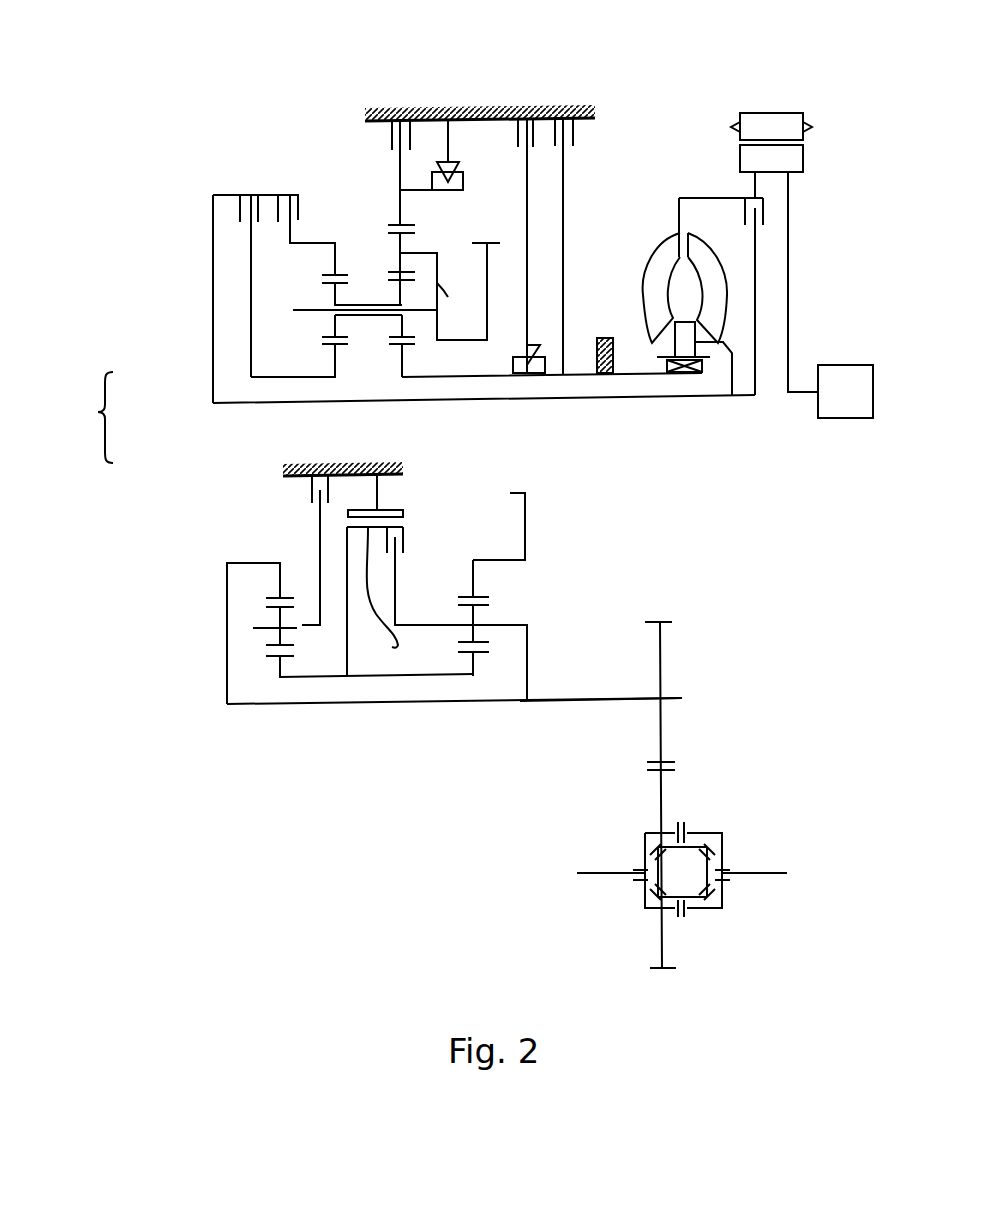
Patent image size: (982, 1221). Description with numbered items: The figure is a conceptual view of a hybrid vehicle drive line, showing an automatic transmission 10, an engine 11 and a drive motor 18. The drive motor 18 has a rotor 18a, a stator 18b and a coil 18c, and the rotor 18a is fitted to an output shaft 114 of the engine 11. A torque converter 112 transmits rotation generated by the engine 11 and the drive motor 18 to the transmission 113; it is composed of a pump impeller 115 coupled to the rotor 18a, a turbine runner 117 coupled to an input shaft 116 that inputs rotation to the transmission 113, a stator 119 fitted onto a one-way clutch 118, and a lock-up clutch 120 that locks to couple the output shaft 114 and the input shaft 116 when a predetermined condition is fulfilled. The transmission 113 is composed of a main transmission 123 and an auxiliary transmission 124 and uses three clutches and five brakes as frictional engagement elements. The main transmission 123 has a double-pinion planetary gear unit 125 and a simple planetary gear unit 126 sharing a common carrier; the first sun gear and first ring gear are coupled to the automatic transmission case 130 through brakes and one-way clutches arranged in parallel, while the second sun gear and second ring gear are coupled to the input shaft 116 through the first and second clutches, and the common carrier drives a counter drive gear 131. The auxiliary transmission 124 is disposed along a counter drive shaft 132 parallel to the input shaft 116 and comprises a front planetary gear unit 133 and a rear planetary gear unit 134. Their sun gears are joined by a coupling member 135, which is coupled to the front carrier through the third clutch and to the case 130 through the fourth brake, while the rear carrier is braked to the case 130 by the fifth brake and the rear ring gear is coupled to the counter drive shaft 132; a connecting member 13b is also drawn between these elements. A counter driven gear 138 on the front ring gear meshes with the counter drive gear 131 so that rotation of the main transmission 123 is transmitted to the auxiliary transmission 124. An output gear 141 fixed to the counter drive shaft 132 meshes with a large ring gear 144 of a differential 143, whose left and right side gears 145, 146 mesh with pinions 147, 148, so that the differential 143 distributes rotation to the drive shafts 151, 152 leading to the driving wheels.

The automatic transmission 10 is at (555, 68).
The engine 11 is at (865, 365).
The drive motor 18 is at (817, 100).
The rotor 18a is at (797, 160).
The stator 18b is at (790, 122).
The coil 18c is at (812, 127).
The torque converter 112 is at (725, 273).
The transmission 113 is at (95, 412).
The output shaft 114 is at (803, 395).
The pump impeller 115 is at (662, 243).
The input shaft 116 is at (607, 400).
The turbine runner 117 is at (727, 278).
The one-way clutch 118 is at (690, 375).
The stator 119 is at (723, 342).
The lock-up clutch 120 is at (765, 212).
The main transmission 123 is at (436, 245).
The auxiliary transmission 124 is at (400, 634).
The double-pinion planetary gear unit 125 is at (450, 227).
The simple planetary gear unit 126 is at (278, 270).
The automatic transmission case 130 is at (585, 107).
The counter drive gear 131 is at (477, 243).
The counter drive shaft 132 is at (412, 705).
The front planetary gear unit 133 is at (498, 722).
The rear planetary gear unit 134 is at (272, 688).
The coupling member 135 is at (366, 680).
The counter driven gear 138 is at (536, 493).
The output gear 141 is at (672, 622).
The differential 143 is at (700, 860).
The large ring gear 144 is at (670, 760).
The left side gear 145 is at (640, 893).
The right side gear 146 is at (725, 893).
The pinion 147 is at (705, 905).
The pinion 148 is at (722, 852).
The drive shaft 151 is at (600, 872).
The drive shaft 152 is at (778, 872).
The connecting member 13b is at (375, 594).